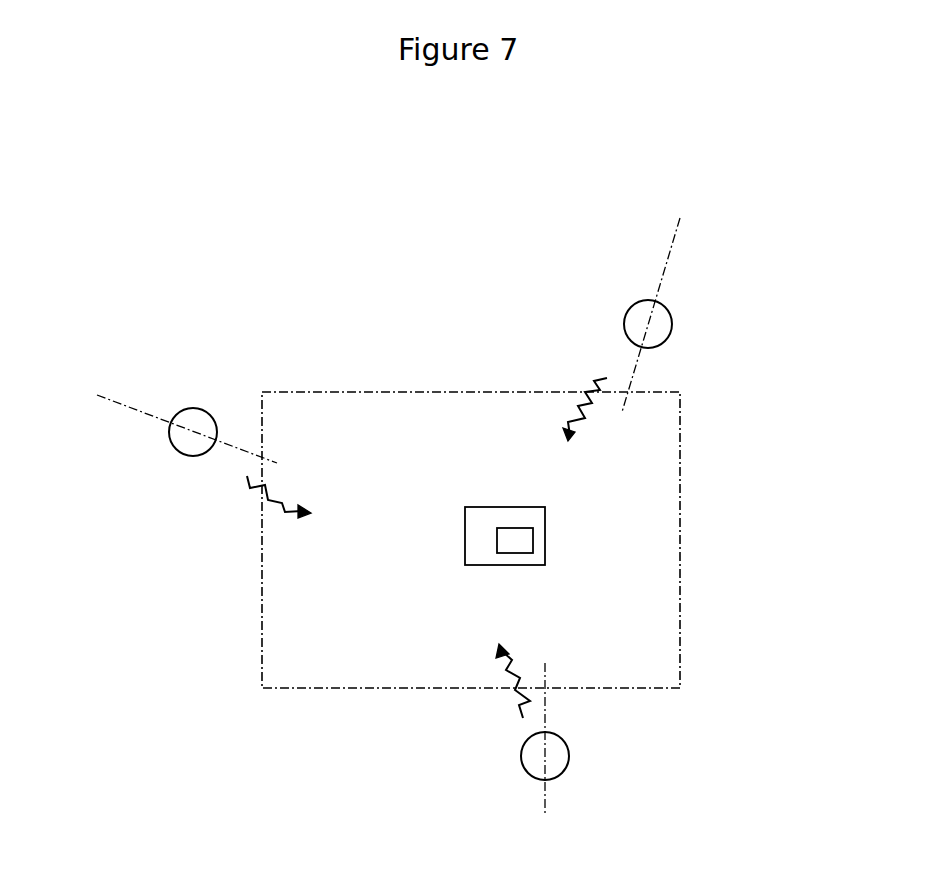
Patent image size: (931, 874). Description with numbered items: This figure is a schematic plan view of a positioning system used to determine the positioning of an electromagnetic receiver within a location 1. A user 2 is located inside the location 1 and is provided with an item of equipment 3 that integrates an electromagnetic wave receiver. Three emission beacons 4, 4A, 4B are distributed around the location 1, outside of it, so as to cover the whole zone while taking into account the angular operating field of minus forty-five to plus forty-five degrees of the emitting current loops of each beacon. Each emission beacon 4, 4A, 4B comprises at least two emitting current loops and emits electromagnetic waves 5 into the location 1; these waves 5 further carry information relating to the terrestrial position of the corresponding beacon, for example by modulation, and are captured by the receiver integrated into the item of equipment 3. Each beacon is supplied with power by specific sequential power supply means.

The location 1 is at (655, 620).
The user 2 is at (478, 518).
The item of equipment 3 is at (520, 540).
The emission beacon 4 is at (670, 325).
The emission beacon 4A is at (193, 457).
The emission beacon 4B is at (530, 768).
The electromagnetic waves 5 is at (607, 378).